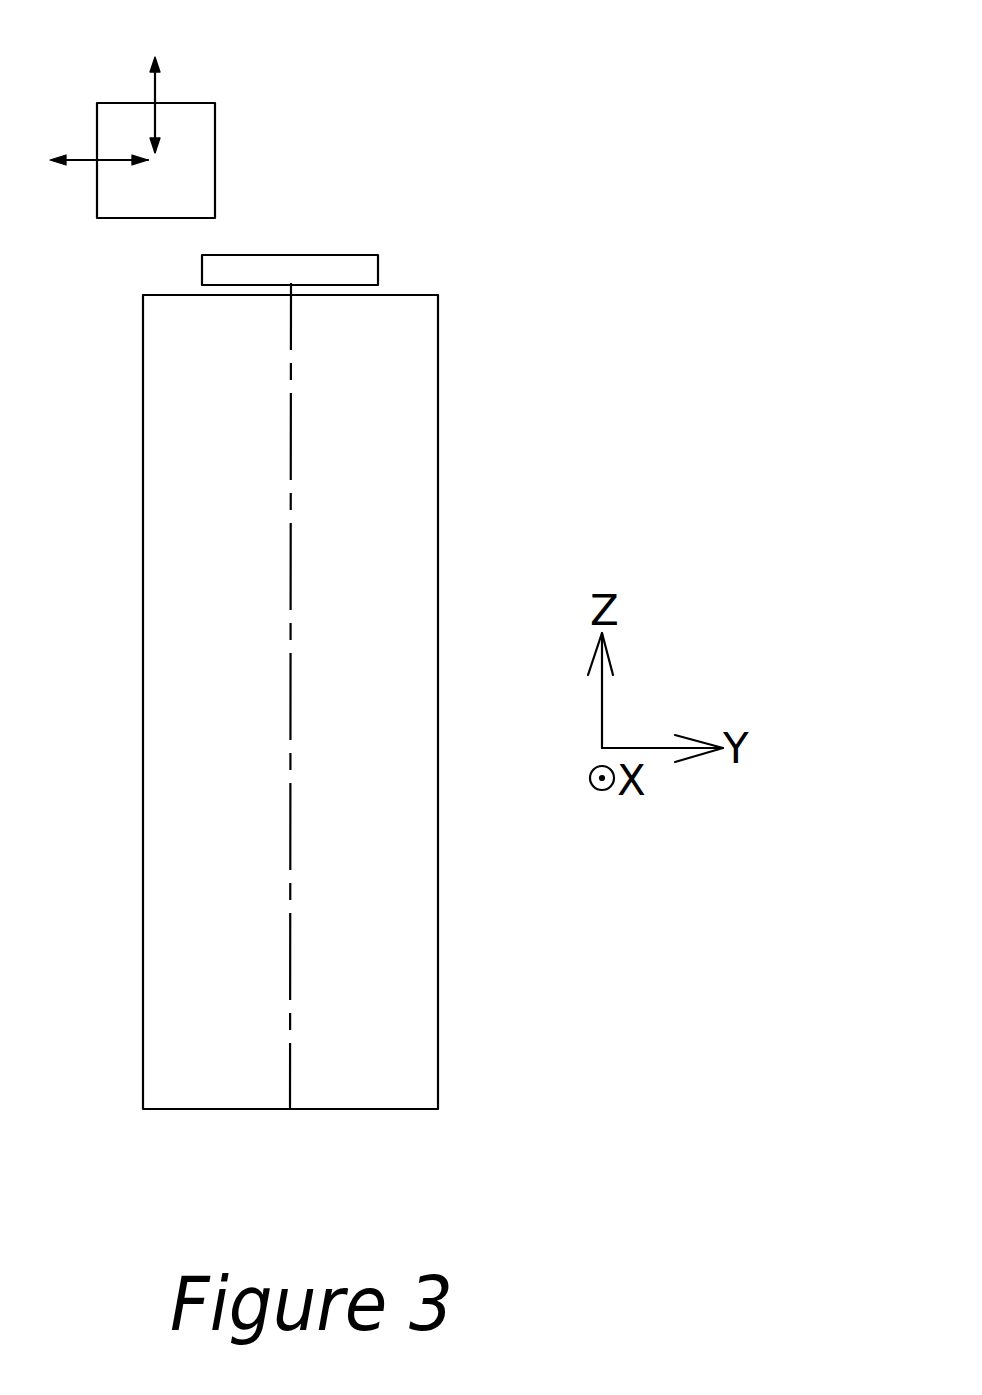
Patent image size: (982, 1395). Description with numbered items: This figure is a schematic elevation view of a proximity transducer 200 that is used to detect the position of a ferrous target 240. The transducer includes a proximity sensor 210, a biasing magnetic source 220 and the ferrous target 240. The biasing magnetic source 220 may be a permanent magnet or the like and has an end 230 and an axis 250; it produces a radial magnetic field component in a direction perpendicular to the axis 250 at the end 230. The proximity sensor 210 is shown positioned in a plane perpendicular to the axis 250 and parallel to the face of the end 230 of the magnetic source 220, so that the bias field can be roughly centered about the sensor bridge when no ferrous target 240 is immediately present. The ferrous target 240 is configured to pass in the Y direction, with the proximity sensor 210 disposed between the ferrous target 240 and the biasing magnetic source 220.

The proximity transducer 200 is at (468, 97).
The proximity sensor 210 is at (378, 254).
The biasing magnetic source 220 is at (277, 667).
The end 230 is at (433, 295).
The ferrous target 240 is at (207, 148).
The axis 250 is at (292, 452).